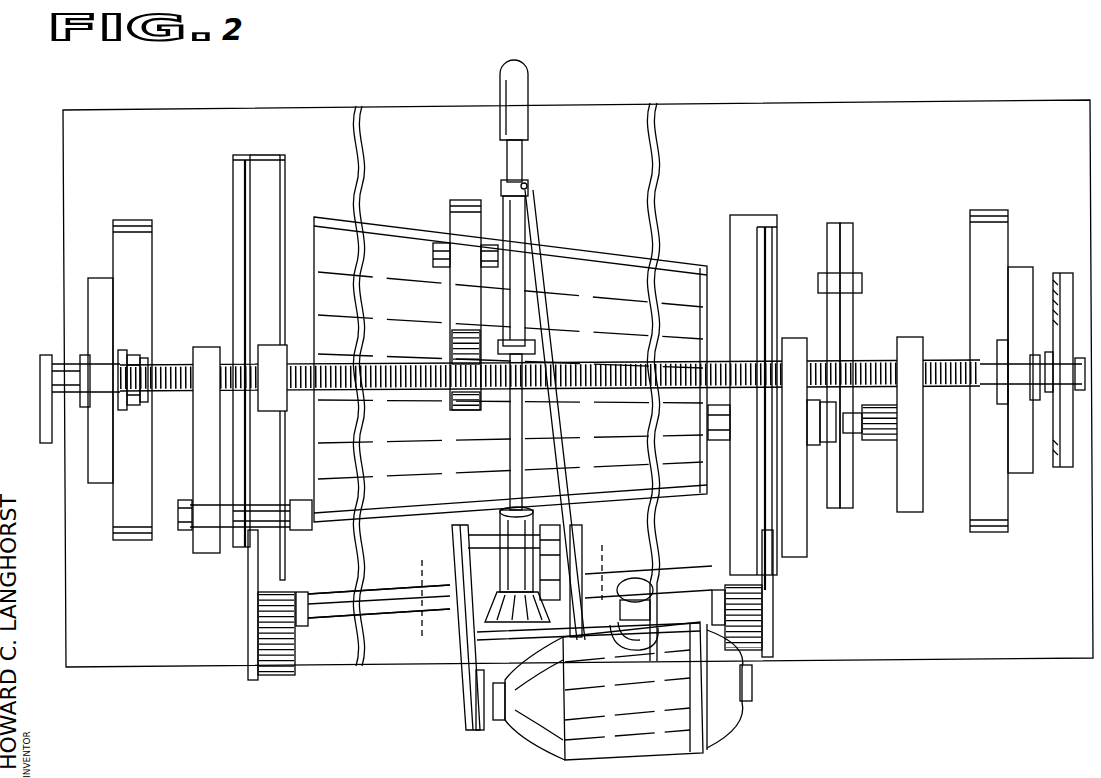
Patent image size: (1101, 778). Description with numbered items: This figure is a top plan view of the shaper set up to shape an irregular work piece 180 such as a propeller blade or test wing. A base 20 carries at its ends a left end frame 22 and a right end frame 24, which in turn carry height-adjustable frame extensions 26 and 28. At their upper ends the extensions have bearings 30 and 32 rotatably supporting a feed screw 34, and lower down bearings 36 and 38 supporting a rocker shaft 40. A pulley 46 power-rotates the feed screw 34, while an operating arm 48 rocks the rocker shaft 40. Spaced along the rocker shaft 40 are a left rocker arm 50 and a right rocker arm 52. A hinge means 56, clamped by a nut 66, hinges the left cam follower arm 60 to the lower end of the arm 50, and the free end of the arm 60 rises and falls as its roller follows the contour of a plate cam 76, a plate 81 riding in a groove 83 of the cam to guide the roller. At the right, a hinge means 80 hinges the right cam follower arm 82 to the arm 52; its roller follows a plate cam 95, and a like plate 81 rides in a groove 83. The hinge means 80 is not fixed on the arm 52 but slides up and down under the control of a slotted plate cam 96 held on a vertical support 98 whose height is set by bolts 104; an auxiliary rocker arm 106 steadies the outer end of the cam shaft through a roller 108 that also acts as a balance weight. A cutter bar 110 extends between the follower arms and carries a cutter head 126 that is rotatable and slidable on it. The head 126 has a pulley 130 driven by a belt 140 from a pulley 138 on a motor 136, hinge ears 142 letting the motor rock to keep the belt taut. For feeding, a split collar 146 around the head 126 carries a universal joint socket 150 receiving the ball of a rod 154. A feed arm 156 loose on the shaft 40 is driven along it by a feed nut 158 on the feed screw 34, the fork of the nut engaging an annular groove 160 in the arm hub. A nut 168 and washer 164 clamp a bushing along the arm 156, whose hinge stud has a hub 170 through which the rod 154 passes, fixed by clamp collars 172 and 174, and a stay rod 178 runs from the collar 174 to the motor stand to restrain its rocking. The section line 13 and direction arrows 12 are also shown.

The lower drive shaft 12 is at (208, 612).
The section line 13 is at (420, 572).
The base 20 is at (137, 660).
The left end frame 22 is at (127, 540).
The right end frame 24 is at (985, 532).
The frame extension 26 is at (106, 483).
The frame extension 28 is at (1018, 473).
The bearing 30 is at (119, 364).
The bearing 32 is at (1000, 350).
The feed screw 34 is at (932, 368).
The bearing 36 is at (85, 408).
The bearing 38 is at (1034, 355).
The rocker shaft 40 is at (188, 362).
The pulley 46 is at (1058, 273).
The operating arm 48 is at (42, 360).
The left rocker arm 50 is at (193, 447).
The right rocker arm 52 is at (801, 338).
The hinge means 56 is at (187, 549).
The left cam follower arm 60 is at (281, 412).
The nut 66 is at (182, 500).
The plate cam 76 is at (270, 315).
The hinge means 80 is at (880, 464).
The plate 81 is at (253, 681).
The right cam follower arm 82 is at (728, 473).
The groove 83 is at (244, 267).
The plate cam 95 is at (736, 248).
The plate cam 96 is at (834, 224).
The vertical support 98 is at (854, 244).
The bolts 104 is at (862, 282).
The auxiliary rocker arm 106 is at (905, 512).
The roller 108 is at (906, 440).
The cutter bar 110 is at (326, 618).
The cutter head 126 is at (587, 541).
The pulley 130 is at (455, 545).
The motor 136 is at (722, 736).
The pulley 138 is at (496, 722).
The belt 140 is at (470, 720).
The hinge ears 142 is at (638, 650).
The split collar 146 is at (516, 630).
The universal joint socket 150 is at (503, 512).
The rod 154 is at (510, 446).
The feed arm 156 is at (450, 221).
The feed nut 158 is at (452, 354).
The annular groove 160 is at (454, 330).
The washer 164 is at (452, 268).
The nut 168 is at (433, 258).
The hub 170 is at (526, 213).
The clamp collar 172 is at (506, 351).
The clamp collar 174 is at (528, 187).
The stay rod 178 is at (562, 426).
The work piece 180 is at (578, 255).